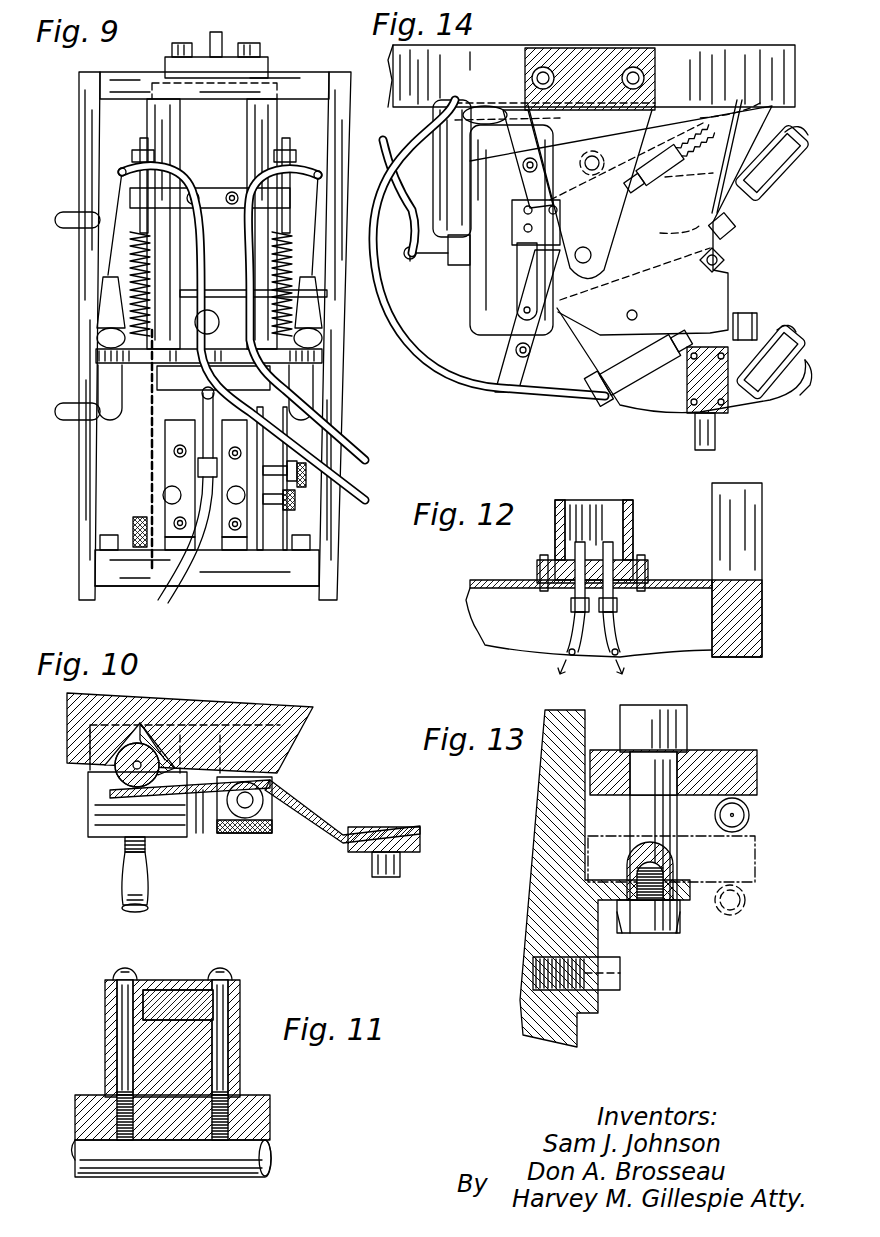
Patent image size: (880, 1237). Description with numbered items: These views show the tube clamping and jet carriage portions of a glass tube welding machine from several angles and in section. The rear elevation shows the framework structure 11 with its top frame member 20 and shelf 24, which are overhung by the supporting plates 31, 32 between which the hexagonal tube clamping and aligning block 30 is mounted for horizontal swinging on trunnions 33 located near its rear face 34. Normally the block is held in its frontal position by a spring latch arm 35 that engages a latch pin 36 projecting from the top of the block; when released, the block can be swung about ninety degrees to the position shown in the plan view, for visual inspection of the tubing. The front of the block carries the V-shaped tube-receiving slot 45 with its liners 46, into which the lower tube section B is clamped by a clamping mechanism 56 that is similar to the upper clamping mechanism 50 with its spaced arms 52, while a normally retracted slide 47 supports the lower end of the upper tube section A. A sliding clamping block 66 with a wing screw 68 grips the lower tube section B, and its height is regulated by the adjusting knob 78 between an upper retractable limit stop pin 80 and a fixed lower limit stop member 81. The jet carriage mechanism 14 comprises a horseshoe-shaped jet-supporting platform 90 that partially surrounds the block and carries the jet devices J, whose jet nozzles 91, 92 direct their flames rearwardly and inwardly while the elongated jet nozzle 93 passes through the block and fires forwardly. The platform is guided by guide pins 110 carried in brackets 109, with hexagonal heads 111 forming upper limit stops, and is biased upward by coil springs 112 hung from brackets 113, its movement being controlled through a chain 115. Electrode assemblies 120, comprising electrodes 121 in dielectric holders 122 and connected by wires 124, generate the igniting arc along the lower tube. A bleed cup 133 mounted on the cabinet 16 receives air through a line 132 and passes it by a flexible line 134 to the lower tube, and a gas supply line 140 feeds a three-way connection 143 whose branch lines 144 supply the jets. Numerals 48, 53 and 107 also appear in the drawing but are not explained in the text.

In FIG. 9, the framework structure 11 is at (346, 124).
In FIG. 14, the framework structure 11 is at (418, 90).
In FIG. 12, the framework structure 11 is at (752, 535).
In FIG. 9, the jet carriage mechanism 14 is at (96, 354).
In FIG. 14, the jet carriage mechanism 14 is at (805, 388).
In FIG. 13, the jet carriage mechanism 14 is at (758, 782).
In FIG. 12, the cabinet 16 is at (470, 598).
In FIG. 9, the top frame member 20 is at (302, 84).
In FIG. 14, the top frame member 20 is at (700, 66).
In FIG. 9, the shelf 24 is at (293, 586).
In FIG. 14, the tube clamping and aligning block 30 is at (665, 288).
In FIG. 10, the tube clamping and aligning block 30 is at (300, 722).
In FIG. 13, the tube clamping and aligning block 30 is at (545, 873).
In FIG. 9, the supporting plate 31 is at (268, 64).
In FIG. 14, the supporting plate 31 is at (655, 80).
In FIG. 9, the supporting plate 32 is at (262, 578).
In FIG. 14, the trunnions 33 is at (592, 255).
In FIG. 14, the rear face 34 is at (470, 296).
In FIG. 14, the spring latch arm 35 is at (520, 280).
In FIG. 14, the latch pin 36 is at (637, 314).
In FIG. 10, the tube-receiving slot 45 is at (120, 744).
In FIG. 10, the liners 46 is at (158, 744).
In FIG. 14, the slide 47 is at (715, 440).
In FIG. 11, the slide 47 is at (184, 990).
In FIG. 14, the block 48 is at (730, 402).
In FIG. 11, the block 48 is at (106, 1047).
In FIG. 10, the clamping mechanism 50 is at (360, 858).
In FIG. 10, the arms 52 is at (199, 835).
In FIG. 10, the bearing block 53 is at (256, 835).
In FIG. 10, the clamping mechanism 56 is at (325, 842).
In FIG. 10, the clamping block 66 is at (90, 812).
In FIG. 10, the wing screw 68 is at (147, 896).
In FIG. 9, the adjusting knob 78 is at (133, 530).
In FIG. 9, the upper retractable limit stop pin 80 is at (272, 466).
In FIG. 9, the fixed lower limit stop member 81 is at (280, 506).
In FIG. 9, the jet-supporting platform 90 is at (96, 361).
In FIG. 14, the jet-supporting platform 90 is at (476, 318).
In FIG. 13, the jet-supporting platform 90 is at (742, 752).
In FIG. 11, the jet-supporting platform 90 is at (76, 1110).
In FIG. 14, the jet nozzle 91 is at (786, 356).
In FIG. 14, the jet nozzle 92 is at (783, 180).
In FIG. 14, the jet nozzle 93 is at (460, 236).
In FIG. 9, the guide block 107 is at (165, 500).
In FIG. 13, the brackets 109 is at (600, 938).
In FIG. 13, the guide pins 110 is at (672, 810).
In FIG. 13, the hexagonal heads 111 is at (665, 704).
In FIG. 9, the coil springs 112 is at (146, 266).
In FIG. 9, the brackets 113 is at (216, 190).
In FIG. 9, the chain 115 is at (150, 482).
In FIG. 9, the electrode assemblies 120 is at (98, 336).
In FIG. 9, the electrodes 121 is at (97, 305).
In FIG. 14, the dielectric holders 122 is at (668, 160).
In FIG. 9, the wires 124 is at (366, 500).
In FIG. 14, the wires 124 is at (480, 124).
In FIG. 12, the line 132 is at (618, 640).
In FIG. 12, the bleed cup 133 is at (634, 524).
In FIG. 12, the flexible line 134 is at (569, 640).
In FIG. 9, the gas supply line 140 is at (168, 604).
In FIG. 9, the three-way connection 143 is at (213, 378).
In FIG. 9, the branch lines 144 is at (103, 372).
In FIG. 13, the branch lines 144 is at (750, 812).
In FIG. 11, the branch lines 144 is at (262, 1172).
In FIG. 9, the upper tube section A is at (223, 40).
In FIG. 10, the lower tube section B is at (112, 785).
In FIG. 9, the jet devices J is at (208, 300).
In FIG. 14, the jet devices J is at (786, 132).